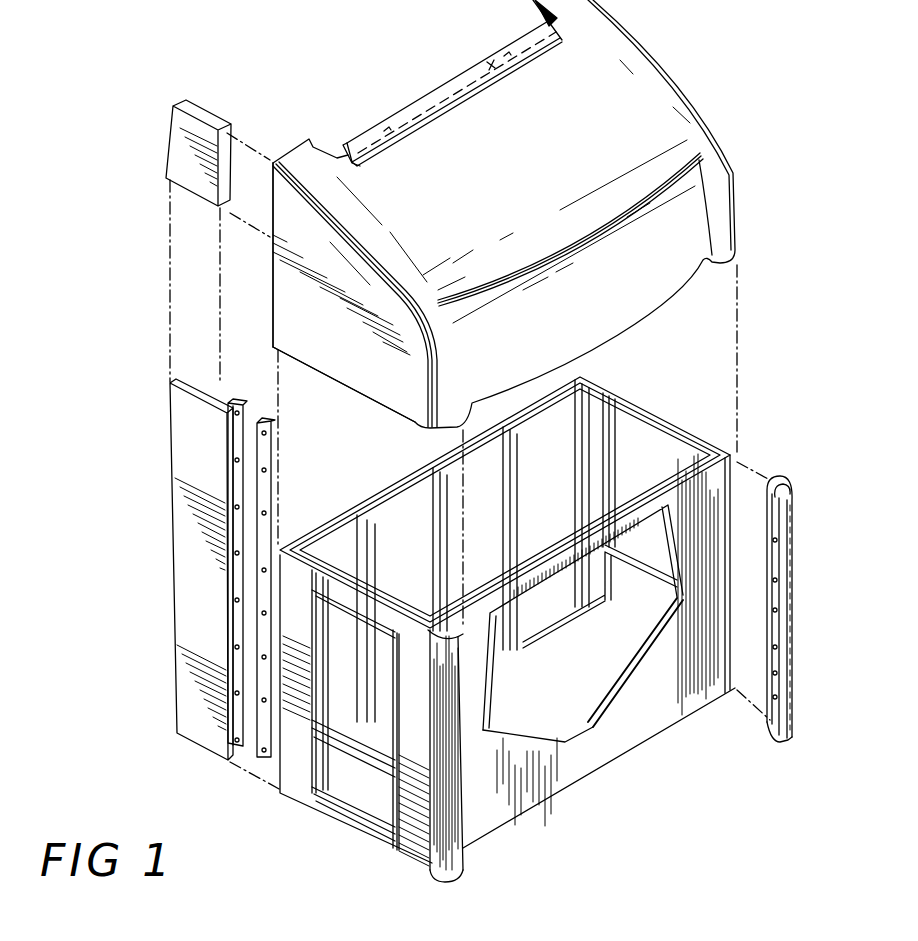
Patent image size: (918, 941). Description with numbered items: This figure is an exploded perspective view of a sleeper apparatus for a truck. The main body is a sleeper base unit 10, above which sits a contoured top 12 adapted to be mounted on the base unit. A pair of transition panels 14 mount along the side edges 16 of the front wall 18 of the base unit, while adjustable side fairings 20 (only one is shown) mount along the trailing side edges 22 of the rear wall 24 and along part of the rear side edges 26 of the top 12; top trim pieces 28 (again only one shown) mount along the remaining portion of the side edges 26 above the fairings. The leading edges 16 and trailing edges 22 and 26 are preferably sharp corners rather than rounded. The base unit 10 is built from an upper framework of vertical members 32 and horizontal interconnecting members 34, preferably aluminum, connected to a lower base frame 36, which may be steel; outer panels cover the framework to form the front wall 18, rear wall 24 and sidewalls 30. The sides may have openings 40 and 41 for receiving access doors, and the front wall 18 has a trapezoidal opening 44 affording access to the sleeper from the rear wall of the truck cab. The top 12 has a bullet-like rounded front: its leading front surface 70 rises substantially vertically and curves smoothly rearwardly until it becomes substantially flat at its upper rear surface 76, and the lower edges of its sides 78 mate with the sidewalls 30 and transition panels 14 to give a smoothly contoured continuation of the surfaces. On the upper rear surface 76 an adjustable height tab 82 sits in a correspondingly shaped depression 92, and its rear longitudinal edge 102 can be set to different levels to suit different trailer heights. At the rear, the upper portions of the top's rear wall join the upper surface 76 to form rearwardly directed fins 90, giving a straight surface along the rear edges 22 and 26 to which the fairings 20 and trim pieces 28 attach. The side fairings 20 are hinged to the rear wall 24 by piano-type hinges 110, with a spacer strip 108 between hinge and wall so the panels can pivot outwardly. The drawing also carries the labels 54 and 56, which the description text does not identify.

The sleeper base unit 10 is at (533, 658).
The contoured top 12 is at (515, 214).
The transition panels 14 is at (634, 697).
The side edges of front wall 16 is at (731, 480).
The front wall 18 is at (673, 713).
The adjustable side fairings 20 is at (188, 589).
The trailing side edges of rear wall 22 is at (280, 773).
The rear wall 24 is at (413, 513).
The rear side edges of top 26 is at (273, 287).
The top trim pieces 28 is at (180, 163).
The sidewalls 30 is at (407, 843).
The vertical members 32 is at (500, 523).
The horizontal interconnecting members 34 is at (537, 410).
The lower base frame 36 is at (500, 660).
The opening 40 is at (658, 445).
The opening 41 is at (367, 793).
The opening 44 is at (607, 707).
The flared lower end of cover 54 is at (777, 720).
The fastener holes 56 is at (775, 540).
The leading front surface 70 is at (647, 300).
The upper rear surface 76 is at (484, 153).
The sides of the top 78 is at (357, 367).
The adjustable height tab 82 is at (452, 83).
The rearwardly directed fins 90 is at (304, 150).
The depression 92 is at (493, 60).
The rear longitudinal edge 102 is at (397, 110).
The spacer strip 108 is at (267, 493).
The piano-type hinges 110 is at (240, 417).